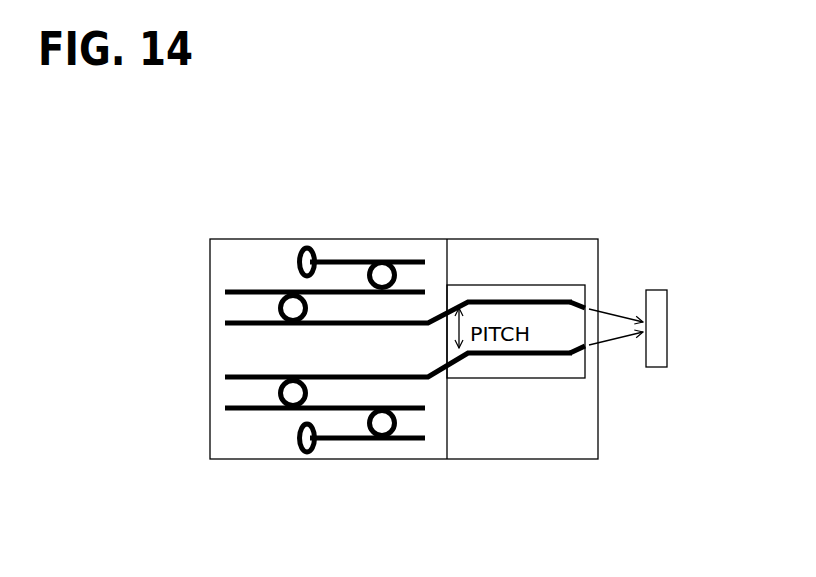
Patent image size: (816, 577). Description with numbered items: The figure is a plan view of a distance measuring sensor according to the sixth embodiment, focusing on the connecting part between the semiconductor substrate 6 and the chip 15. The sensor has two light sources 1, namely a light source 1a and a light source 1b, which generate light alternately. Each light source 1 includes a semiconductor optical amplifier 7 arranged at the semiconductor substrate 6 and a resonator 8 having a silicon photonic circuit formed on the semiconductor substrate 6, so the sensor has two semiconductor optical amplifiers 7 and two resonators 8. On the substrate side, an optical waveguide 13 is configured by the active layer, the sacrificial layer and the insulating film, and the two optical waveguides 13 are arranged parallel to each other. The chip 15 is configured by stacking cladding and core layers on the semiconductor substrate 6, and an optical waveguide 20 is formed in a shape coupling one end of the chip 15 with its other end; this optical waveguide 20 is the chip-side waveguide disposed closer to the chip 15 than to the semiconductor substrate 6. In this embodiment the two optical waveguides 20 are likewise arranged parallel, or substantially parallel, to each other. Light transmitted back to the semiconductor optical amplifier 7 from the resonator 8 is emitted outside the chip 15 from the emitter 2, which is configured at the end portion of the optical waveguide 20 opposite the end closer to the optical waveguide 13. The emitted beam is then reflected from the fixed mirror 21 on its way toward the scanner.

The light source 1 is at (450, 332).
The light source 1a is at (424, 249).
The light source 1b is at (418, 451).
The emitter 2 is at (582, 294).
The semiconductor substrate 6 is at (247, 237).
The semiconductor optical amplifier 7 is at (528, 297).
The resonator 8 is at (350, 257).
The optical waveguide 13 is at (268, 292).
The chip 15 is at (505, 281).
The optical waveguide 20 is at (574, 297).
The fixed mirror 21 is at (657, 310).